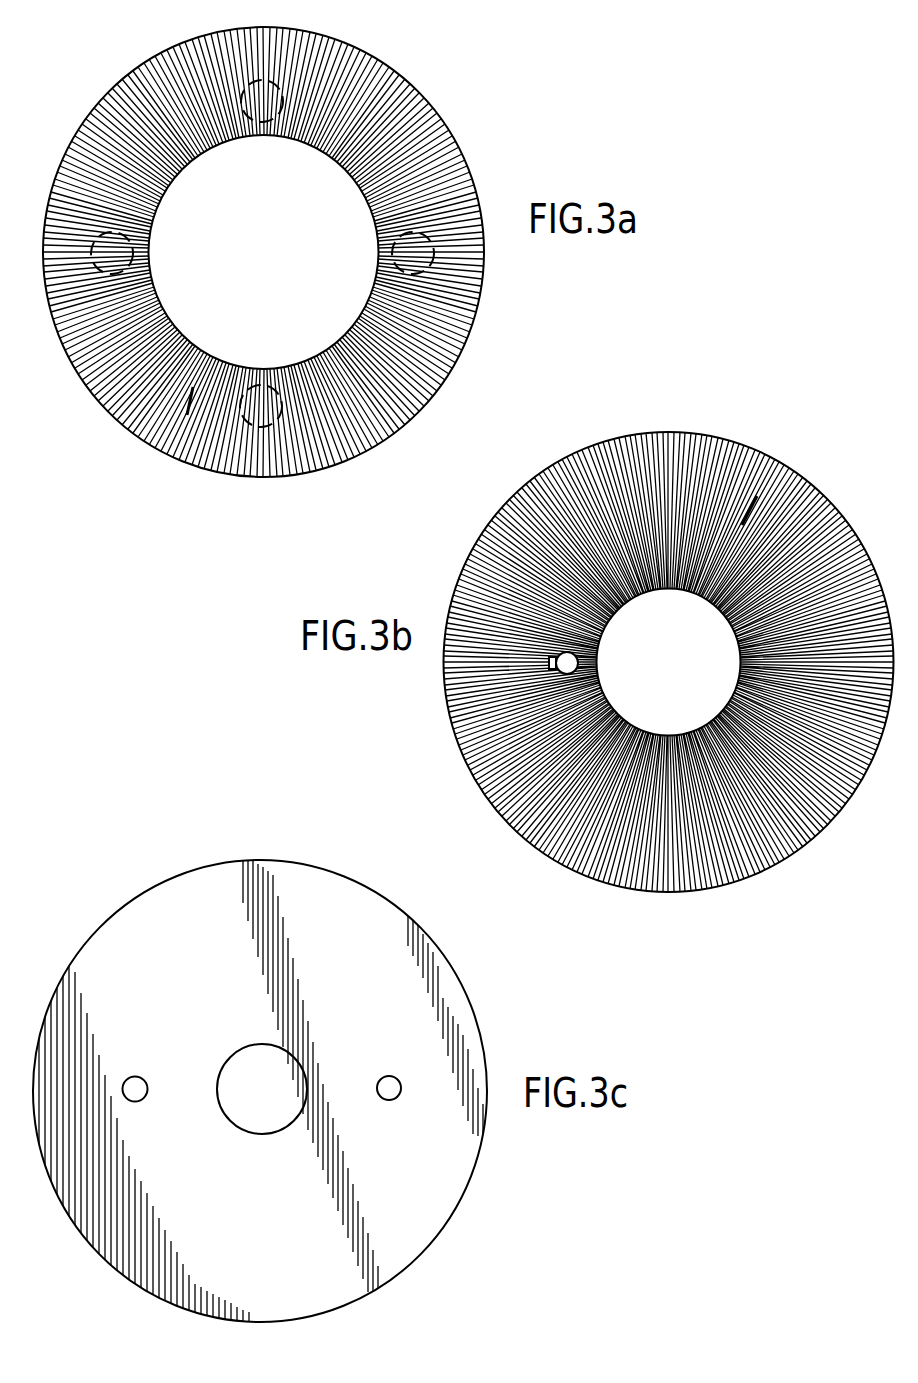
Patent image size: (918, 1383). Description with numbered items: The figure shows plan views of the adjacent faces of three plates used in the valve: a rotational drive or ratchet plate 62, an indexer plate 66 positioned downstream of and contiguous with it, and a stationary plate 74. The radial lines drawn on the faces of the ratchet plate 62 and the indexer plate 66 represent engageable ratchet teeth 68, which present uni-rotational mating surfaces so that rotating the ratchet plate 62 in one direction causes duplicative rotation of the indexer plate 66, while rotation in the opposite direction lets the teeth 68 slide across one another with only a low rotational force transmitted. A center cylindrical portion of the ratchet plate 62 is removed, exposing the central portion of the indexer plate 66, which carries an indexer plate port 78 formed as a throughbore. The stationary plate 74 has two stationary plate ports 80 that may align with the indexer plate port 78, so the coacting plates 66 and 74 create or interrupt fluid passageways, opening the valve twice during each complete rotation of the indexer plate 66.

In FIG. 3A, the ratchet plate 62 is at (424, 100).
In FIG. 3B, the indexer plate 66 is at (797, 852).
In FIG. 3A, the ratchet teeth 68 is at (176, 455).
In FIG. 3B, the ratchet teeth 68 is at (752, 505).
In FIG. 3C, the stationary plate 74 is at (479, 1032).
In FIG. 3B, the indexer plate port 78 is at (550, 662).
In FIG. 3C, the stationary plate port 80 is at (135, 1077).